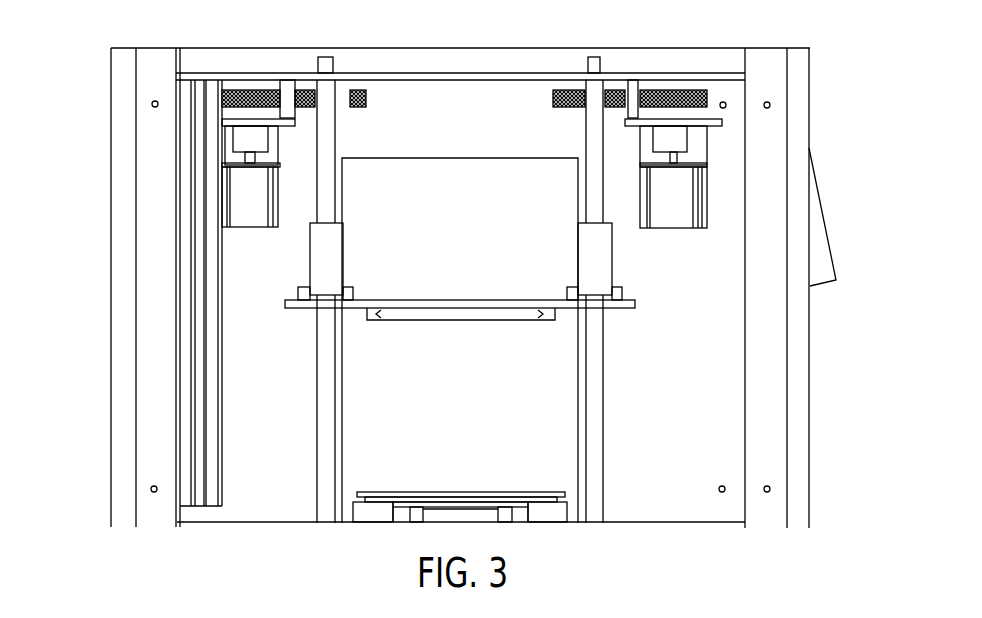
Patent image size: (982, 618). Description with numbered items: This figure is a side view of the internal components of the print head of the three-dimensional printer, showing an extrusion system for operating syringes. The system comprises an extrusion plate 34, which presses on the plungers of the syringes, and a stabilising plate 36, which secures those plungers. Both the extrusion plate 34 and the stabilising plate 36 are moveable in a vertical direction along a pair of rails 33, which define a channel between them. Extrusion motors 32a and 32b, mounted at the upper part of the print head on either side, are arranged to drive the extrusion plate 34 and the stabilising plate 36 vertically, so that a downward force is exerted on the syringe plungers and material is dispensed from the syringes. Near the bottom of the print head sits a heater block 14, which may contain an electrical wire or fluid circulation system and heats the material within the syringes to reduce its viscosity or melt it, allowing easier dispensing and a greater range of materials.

The heater block 14 is at (548, 498).
The extrusion motor 32a is at (243, 198).
The extrusion motor 32b is at (678, 198).
The rails 33 is at (325, 137).
The extrusion plate 34 is at (632, 305).
The stabilising plate 36 is at (523, 316).